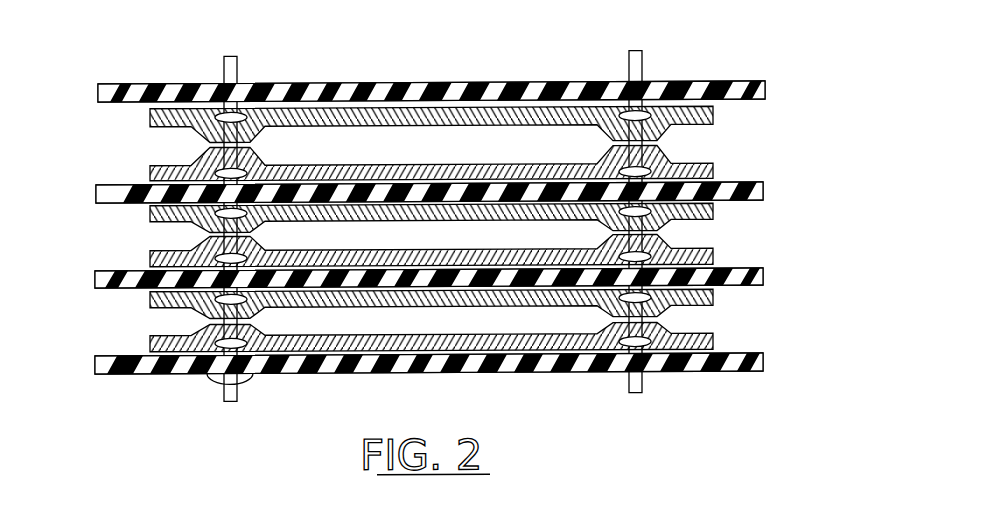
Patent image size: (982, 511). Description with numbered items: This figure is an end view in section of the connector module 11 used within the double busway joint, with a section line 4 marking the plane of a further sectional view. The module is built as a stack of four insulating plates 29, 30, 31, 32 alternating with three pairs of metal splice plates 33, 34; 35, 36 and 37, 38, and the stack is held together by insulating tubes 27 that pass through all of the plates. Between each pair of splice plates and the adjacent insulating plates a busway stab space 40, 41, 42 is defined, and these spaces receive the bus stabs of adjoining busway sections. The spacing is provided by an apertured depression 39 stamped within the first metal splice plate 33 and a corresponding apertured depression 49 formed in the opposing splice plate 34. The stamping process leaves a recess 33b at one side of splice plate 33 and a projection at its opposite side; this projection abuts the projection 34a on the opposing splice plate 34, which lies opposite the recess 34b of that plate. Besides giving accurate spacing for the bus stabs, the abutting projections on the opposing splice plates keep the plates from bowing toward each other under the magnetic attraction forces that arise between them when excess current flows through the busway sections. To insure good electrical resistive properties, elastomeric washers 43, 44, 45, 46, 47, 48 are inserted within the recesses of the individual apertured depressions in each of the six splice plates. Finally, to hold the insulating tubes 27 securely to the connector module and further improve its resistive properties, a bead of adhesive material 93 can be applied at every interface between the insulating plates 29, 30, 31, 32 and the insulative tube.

The connector module 11 is at (893, 244).
The section line 4 is at (229, 42).
The insulating tube 27 is at (223, 68).
The insulating plate 29 is at (768, 82).
The insulating plate 30 is at (767, 185).
The insulating plate 31 is at (767, 270).
The insulating plate 32 is at (767, 355).
The first metal splice plate 33 is at (148, 123).
The recess 33b is at (250, 108).
The opposing splice plate 34 is at (148, 173).
The projection 34a is at (197, 156).
The recess 34b is at (253, 158).
The splice plate 35 is at (148, 215).
The splice plate 36 is at (148, 257).
The splice plate 37 is at (148, 299).
The splice plate 38 is at (148, 341).
The apertured depression 39 is at (270, 133).
The busway stab space 40 is at (448, 157).
The busway stab space 41 is at (447, 248).
The busway stab space 42 is at (447, 336).
The elastomeric washer 43 is at (640, 114).
The elastomeric washer 44 is at (620, 170).
The elastomeric washer 45 is at (623, 219).
The elastomeric washer 46 is at (653, 258).
The elastomeric washer 47 is at (620, 305).
The elastomeric washer 48 is at (653, 340).
The apertured depression 49 is at (185, 158).
The bead of adhesive material 93 is at (247, 383).